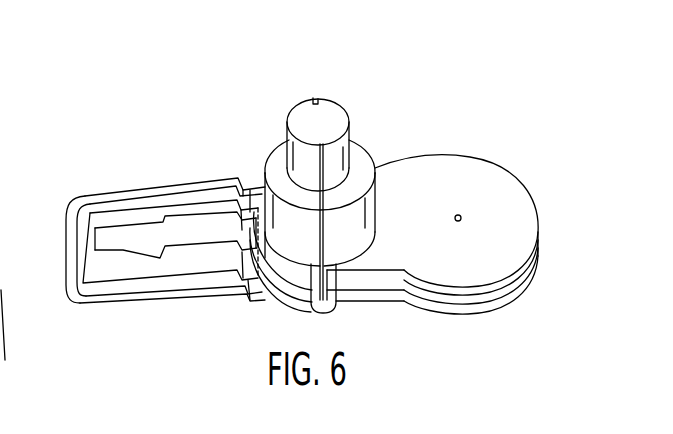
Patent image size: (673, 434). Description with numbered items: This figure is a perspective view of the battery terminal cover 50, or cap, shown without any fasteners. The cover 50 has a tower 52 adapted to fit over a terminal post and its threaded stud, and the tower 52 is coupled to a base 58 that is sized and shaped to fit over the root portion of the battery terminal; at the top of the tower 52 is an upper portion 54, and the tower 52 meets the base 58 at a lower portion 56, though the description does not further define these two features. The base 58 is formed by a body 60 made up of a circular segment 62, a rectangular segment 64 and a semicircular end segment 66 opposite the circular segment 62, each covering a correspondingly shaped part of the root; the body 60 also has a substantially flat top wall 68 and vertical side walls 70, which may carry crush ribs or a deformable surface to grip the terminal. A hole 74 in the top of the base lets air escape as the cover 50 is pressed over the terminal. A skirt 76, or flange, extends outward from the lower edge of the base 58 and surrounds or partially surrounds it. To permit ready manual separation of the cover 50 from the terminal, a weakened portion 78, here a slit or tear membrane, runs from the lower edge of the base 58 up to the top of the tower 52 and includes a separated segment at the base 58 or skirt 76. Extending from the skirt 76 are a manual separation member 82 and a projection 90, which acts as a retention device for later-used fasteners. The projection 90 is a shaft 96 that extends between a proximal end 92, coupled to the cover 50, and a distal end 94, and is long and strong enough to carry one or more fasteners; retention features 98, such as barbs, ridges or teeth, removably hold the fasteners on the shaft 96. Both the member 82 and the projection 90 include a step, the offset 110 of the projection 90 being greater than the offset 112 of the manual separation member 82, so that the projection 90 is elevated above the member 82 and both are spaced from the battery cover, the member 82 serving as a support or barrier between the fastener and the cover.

The battery terminal cover 50 is at (533, 90).
The tower 52 is at (386, 136).
The slit 54 is at (298, 140).
The boss base 56 is at (271, 217).
The base 58 is at (514, 152).
The body 60 is at (497, 257).
The circular segment 62 is at (460, 262).
The rectangular segment 64 is at (381, 255).
The semicircular end segment 66 is at (272, 263).
The top wall 68 is at (436, 218).
The vertical side walls 70 is at (490, 283).
The hole 74 is at (461, 215).
The skirt 76 is at (480, 308).
The weakened portion 78 is at (310, 283).
The manual separation member 82 is at (90, 194).
The projection 90 is at (147, 222).
The proximal end 92 is at (237, 212).
The distal end 94 is at (95, 229).
The shaft 96 is at (196, 233).
The retention features 98 is at (160, 259).
The offset of projection 110 is at (236, 237).
The offset of manual separation member 112 is at (238, 177).